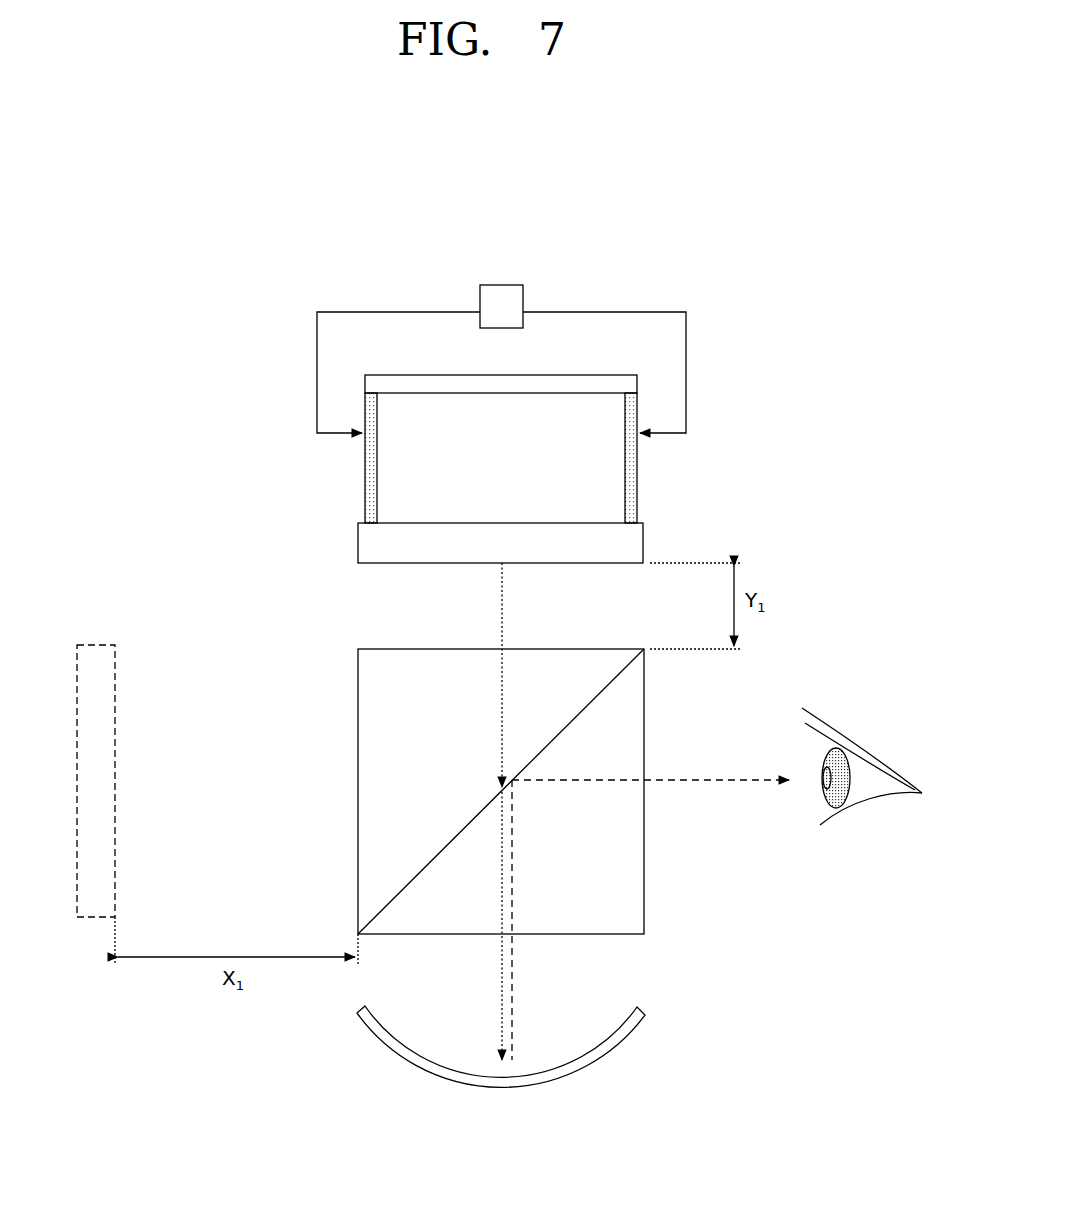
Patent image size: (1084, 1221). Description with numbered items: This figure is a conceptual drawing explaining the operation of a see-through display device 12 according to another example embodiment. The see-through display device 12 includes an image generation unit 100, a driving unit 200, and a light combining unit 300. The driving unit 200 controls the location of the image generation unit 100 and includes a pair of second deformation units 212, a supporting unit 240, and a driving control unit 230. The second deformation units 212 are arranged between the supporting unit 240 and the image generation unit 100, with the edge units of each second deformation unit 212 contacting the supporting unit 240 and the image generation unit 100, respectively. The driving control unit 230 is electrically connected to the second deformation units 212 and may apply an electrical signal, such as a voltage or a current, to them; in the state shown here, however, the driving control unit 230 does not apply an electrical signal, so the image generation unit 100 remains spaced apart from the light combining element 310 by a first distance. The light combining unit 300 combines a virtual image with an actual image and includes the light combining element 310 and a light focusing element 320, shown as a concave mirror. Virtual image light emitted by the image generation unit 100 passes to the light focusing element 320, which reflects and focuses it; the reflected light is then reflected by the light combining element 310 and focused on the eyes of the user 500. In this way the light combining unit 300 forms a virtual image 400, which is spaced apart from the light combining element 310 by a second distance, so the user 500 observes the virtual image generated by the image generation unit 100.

The see-through display device 12 is at (812, 270).
The image generation unit 100 is at (643, 530).
The driving unit 200 is at (769, 293).
The second deformation units 212 is at (637, 458).
The driving control unit 230 is at (523, 298).
The supporting unit 240 is at (637, 385).
The light combining unit 300 is at (746, 900).
The light combining element 310 is at (644, 903).
The light focusing element 320 is at (645, 1015).
The virtual image 400 is at (97, 645).
The user 500 is at (867, 798).